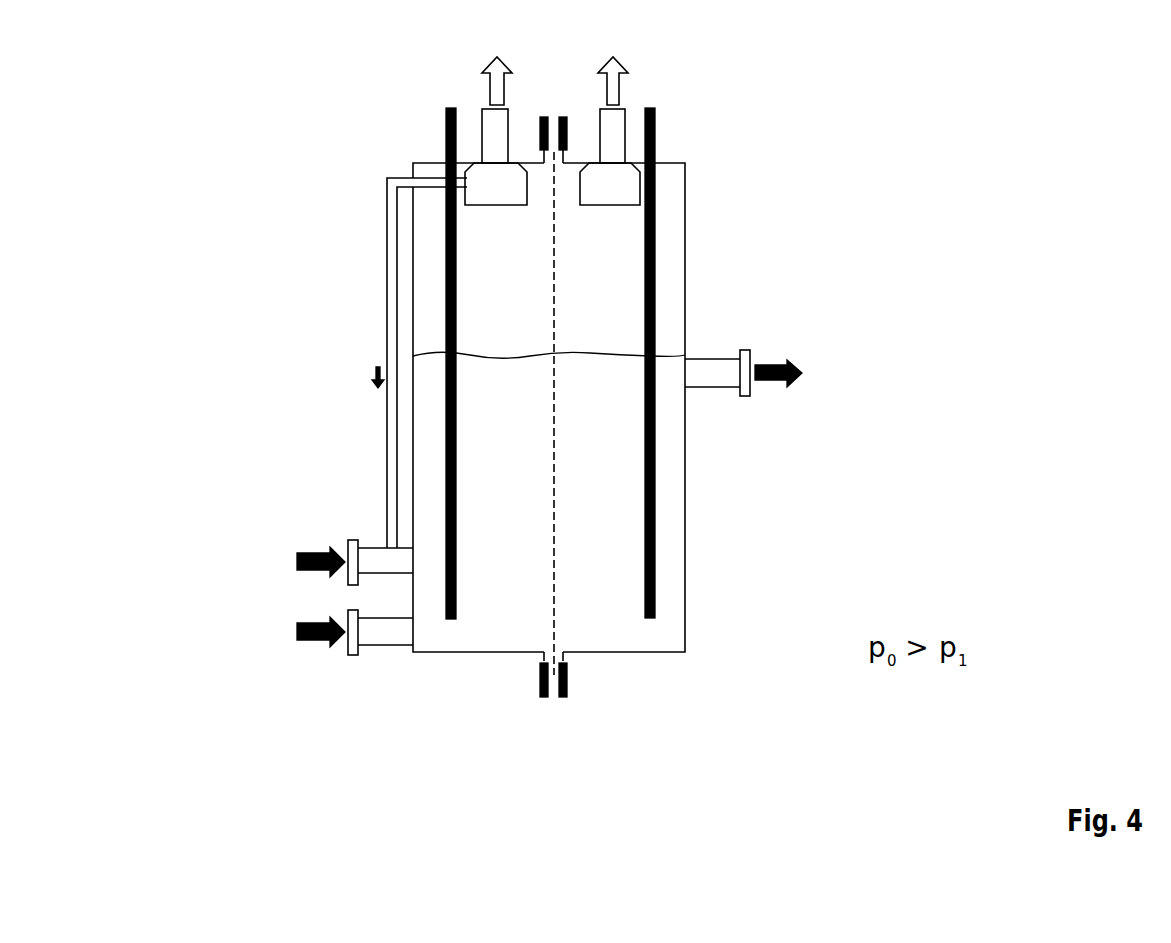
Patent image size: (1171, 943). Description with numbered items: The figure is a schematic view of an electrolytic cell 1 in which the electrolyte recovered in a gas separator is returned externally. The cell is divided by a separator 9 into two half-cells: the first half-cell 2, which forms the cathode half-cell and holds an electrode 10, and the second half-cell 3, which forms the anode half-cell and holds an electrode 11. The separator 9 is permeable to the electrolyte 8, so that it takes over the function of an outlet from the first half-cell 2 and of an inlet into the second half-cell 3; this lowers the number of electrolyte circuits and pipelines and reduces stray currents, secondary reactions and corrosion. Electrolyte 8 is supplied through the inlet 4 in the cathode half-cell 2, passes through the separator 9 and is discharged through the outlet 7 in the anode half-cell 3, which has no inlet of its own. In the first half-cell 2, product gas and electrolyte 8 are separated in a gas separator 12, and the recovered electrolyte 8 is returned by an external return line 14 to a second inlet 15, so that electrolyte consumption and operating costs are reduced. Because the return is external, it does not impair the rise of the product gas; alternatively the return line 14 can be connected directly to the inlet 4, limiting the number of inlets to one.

The electrolytic cell 1 is at (543, 401).
The first half-cell 2 is at (489, 289).
The second half-cell 3 is at (599, 289).
The inlet for electrolyte 4 is at (385, 650).
The outlet for electrolyte 7 is at (719, 393).
The electrolyte 8 is at (512, 598).
The separator 9 is at (557, 562).
The electrode 10 is at (443, 495).
The electrode 11 is at (657, 527).
The gas separator 12 is at (483, 181).
The external return line 14 is at (385, 315).
The second inlet 15 is at (373, 545).